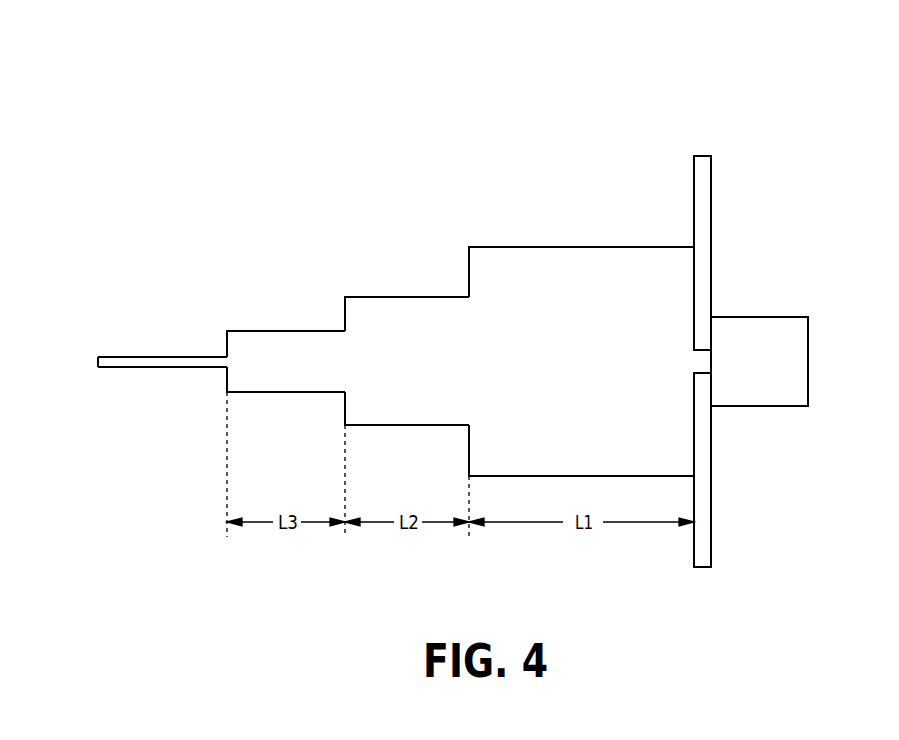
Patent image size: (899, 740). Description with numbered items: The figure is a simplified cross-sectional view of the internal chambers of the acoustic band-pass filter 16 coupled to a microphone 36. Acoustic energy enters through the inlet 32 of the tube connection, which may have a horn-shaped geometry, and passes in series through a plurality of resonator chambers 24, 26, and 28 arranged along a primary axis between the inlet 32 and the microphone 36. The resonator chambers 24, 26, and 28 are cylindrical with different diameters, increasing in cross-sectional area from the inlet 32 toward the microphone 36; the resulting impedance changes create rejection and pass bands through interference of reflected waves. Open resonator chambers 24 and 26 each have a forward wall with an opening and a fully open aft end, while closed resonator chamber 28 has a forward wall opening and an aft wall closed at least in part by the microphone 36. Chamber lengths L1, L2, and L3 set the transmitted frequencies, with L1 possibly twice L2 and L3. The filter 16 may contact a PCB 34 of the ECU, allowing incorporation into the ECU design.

The acoustic band-pass filter 16 is at (478, 103).
The resonator chamber 24 is at (257, 331).
The resonator chamber 26 is at (380, 297).
The closed resonator chamber 28 is at (533, 247).
The inlet 32 is at (137, 357).
The PCB 34 is at (711, 258).
The microphone 36 is at (808, 377).